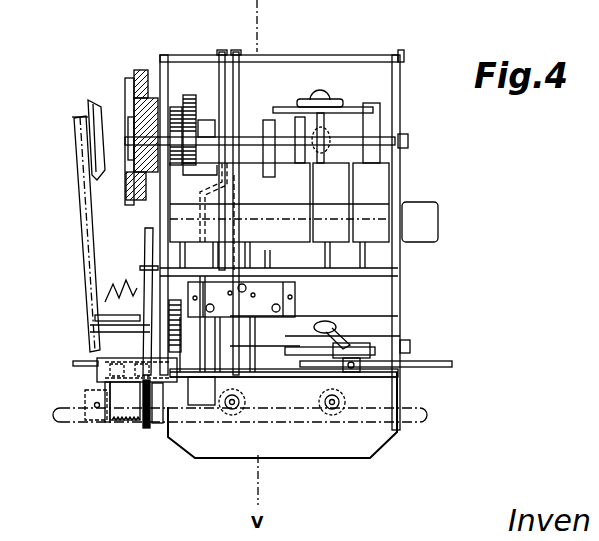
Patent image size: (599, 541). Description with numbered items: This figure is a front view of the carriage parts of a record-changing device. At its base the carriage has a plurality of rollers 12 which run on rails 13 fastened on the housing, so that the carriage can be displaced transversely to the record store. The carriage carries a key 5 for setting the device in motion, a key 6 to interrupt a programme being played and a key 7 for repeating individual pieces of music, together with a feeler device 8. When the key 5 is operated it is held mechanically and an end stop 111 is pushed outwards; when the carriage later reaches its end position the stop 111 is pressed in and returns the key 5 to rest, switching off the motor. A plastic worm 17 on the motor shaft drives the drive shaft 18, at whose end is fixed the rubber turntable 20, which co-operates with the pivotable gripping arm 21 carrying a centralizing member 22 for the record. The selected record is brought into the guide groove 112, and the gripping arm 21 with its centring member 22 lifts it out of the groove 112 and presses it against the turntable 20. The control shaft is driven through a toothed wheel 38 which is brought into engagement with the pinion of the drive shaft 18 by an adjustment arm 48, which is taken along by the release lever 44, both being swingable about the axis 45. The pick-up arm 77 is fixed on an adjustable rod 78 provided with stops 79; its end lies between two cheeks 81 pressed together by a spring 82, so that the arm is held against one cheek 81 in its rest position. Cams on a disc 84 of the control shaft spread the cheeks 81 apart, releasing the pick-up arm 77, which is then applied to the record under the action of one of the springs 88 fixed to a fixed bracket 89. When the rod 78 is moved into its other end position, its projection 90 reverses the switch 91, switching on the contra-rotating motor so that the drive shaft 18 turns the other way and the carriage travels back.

The axis 45 is at (373, 55).
The drive shaft 18 is at (245, 140).
The adjustment arm 48 is at (220, 50).
The release lever 44 is at (237, 50).
The toothed wheel 38 is at (188, 97).
The turntable 20 is at (137, 72).
The worm 17 is at (322, 138).
The key for repeating individual pieces of music 7 is at (288, 190).
The key to interrupt a programme 6 is at (329, 190).
The key for setting the device in motion 5 is at (369, 190).
The end stop 111 is at (423, 222).
The feeler device 8 is at (275, 290).
The switch 91 is at (330, 333).
The projection 90 is at (372, 352).
The stops 79 is at (400, 368).
The adjustable rod 78 is at (303, 366).
The rails 13 is at (410, 418).
The rollers 12 is at (327, 408).
The centralizing member 22 is at (90, 113).
The gripping arm 21 is at (82, 180).
The pick-up arm 77 is at (147, 240).
The guide groove 112 is at (113, 283).
The springs 88 is at (137, 318).
The fixed bracket 89 is at (100, 373).
The cheeks 81 is at (108, 422).
The spring 82 is at (127, 420).
The disc 84 is at (146, 425).